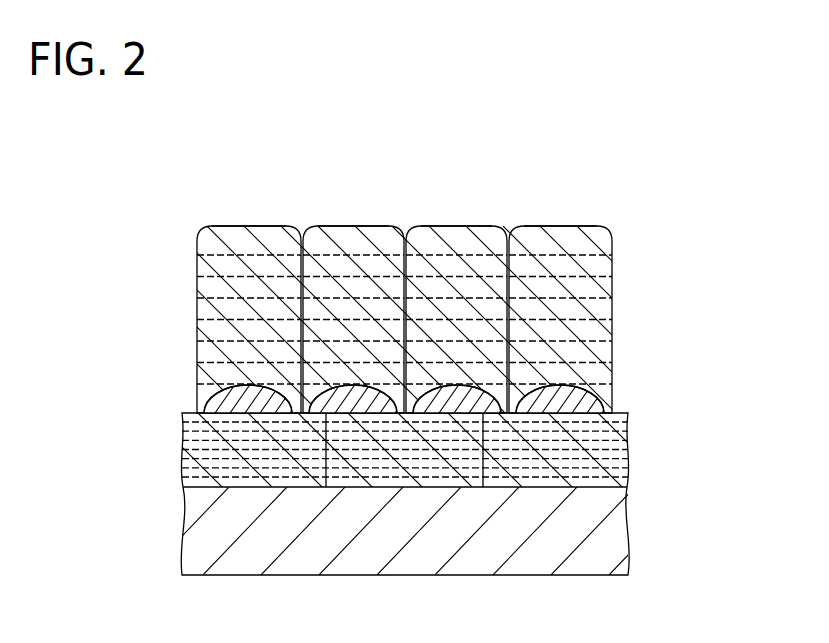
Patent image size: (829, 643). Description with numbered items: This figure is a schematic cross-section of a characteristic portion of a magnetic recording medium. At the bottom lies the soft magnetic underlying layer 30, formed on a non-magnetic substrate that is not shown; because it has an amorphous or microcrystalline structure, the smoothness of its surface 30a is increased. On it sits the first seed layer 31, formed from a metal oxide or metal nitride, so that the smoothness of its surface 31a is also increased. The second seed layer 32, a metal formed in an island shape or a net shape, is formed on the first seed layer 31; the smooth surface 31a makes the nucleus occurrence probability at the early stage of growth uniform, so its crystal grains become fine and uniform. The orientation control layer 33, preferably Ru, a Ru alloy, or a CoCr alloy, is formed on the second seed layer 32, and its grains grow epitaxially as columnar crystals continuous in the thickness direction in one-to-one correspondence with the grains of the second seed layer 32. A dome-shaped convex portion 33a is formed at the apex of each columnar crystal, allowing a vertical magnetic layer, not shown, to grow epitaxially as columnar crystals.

The soft magnetic underlying layer 30 is at (623, 523).
The surface of the soft magnetic underlying layer 30a is at (627, 475).
The first seed layer 31 is at (625, 442).
The surface of the first seed layer 31a is at (599, 399).
The second seed layer 32 is at (578, 383).
The orientation control layer 33 is at (592, 290).
The dome-shaped convex portion 33a is at (577, 226).